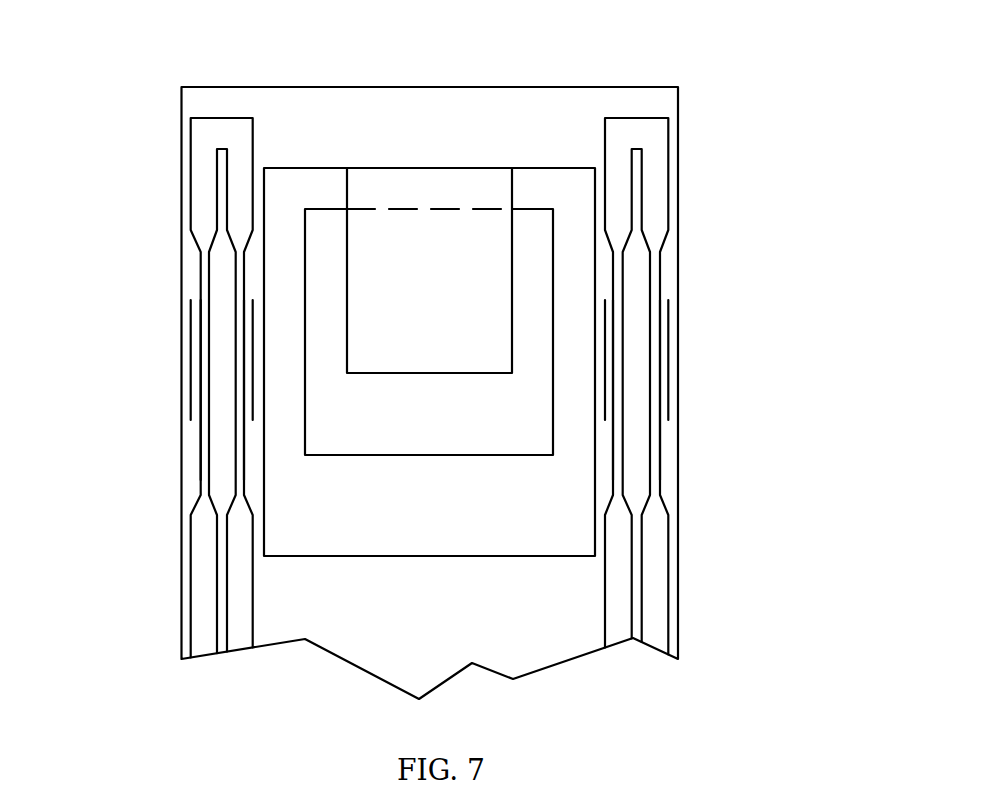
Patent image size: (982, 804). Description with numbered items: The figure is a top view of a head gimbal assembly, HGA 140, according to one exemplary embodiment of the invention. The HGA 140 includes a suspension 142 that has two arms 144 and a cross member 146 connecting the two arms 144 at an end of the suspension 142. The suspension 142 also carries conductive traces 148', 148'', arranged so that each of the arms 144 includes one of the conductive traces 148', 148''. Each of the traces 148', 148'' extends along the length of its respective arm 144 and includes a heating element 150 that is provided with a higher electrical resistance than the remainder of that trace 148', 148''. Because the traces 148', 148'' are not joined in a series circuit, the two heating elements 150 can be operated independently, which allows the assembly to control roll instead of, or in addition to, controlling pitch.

The HGA 140 is at (730, 87).
The suspension 142 is at (182, 87).
The arms 144 is at (192, 363).
The cross member 146 is at (433, 108).
The conductive trace 148' is at (154, 388).
The conductive trace 148'' is at (708, 386).
The heating element 150 is at (240, 433).